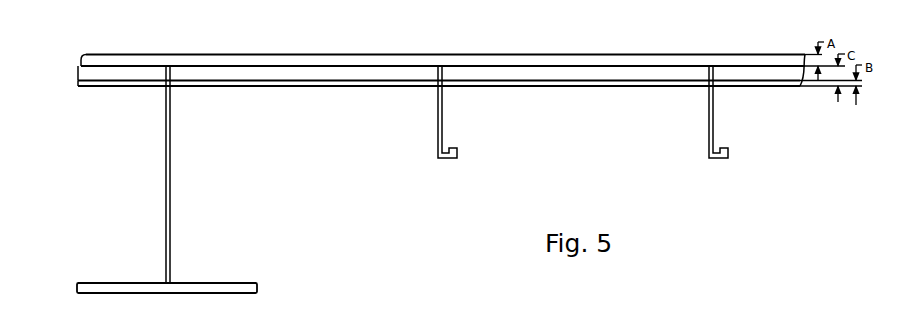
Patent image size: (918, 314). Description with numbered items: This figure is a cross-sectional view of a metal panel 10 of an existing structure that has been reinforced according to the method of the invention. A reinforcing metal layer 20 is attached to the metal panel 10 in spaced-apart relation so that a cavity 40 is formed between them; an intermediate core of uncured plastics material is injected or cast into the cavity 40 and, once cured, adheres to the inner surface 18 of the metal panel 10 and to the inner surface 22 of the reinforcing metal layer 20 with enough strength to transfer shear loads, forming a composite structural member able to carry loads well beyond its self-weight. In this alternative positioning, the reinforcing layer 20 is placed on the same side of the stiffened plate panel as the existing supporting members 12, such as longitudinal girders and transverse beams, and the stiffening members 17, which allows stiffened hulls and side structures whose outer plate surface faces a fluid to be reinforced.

The metal panel 10 is at (89, 59).
The cavity 40 is at (85, 74).
The inner surface of the metal panel 18 is at (557, 65).
The reinforcing metal layer 20 is at (84, 87).
The inner surface of the reinforcing metal layer 22 is at (381, 87).
The supporting members 12 is at (171, 231).
The stiffening members 17 is at (446, 129).